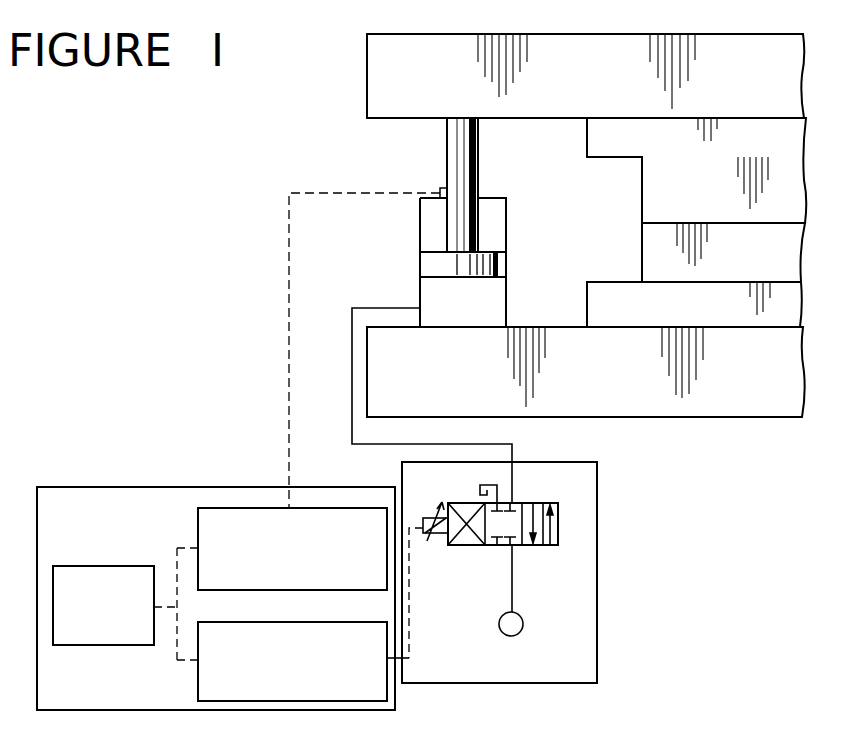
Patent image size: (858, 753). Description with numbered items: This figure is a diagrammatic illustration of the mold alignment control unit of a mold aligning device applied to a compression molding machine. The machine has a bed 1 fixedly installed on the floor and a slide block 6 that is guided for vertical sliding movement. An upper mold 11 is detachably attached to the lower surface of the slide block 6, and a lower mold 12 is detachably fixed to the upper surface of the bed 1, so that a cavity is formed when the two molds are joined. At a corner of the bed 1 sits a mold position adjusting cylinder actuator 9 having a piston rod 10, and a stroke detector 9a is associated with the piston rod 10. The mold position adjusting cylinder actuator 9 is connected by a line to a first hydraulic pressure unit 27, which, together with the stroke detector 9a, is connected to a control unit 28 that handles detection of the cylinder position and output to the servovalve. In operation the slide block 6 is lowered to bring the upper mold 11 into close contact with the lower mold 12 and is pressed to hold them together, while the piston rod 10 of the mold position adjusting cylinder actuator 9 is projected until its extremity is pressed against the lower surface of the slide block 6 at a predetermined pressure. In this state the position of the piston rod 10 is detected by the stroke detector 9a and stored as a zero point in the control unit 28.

The bed 1 is at (797, 374).
The slide block 6 is at (797, 72).
The mold position adjusting cylinder actuator 9 is at (506, 218).
The stroke detector 9a is at (441, 188).
The piston rod 10 is at (478, 138).
The upper mold 11 is at (805, 186).
The lower mold 12 is at (800, 252).
The first hydraulic pressure unit 27 is at (597, 462).
The control unit 28 is at (172, 487).